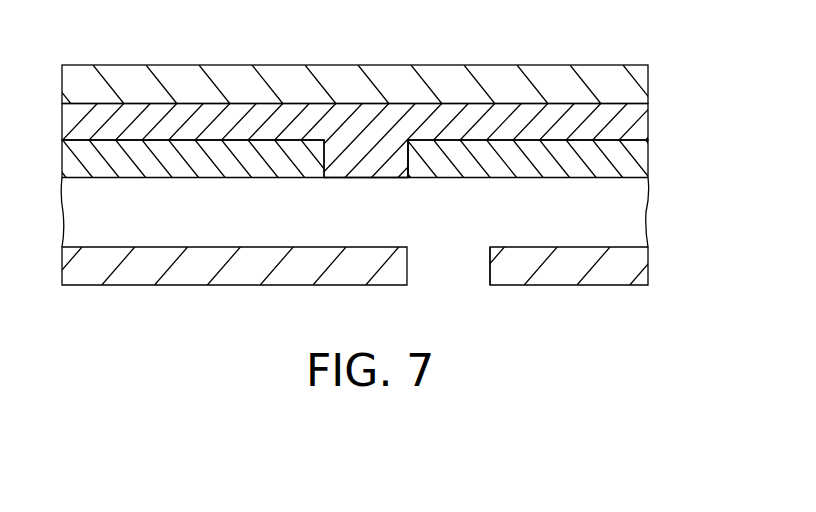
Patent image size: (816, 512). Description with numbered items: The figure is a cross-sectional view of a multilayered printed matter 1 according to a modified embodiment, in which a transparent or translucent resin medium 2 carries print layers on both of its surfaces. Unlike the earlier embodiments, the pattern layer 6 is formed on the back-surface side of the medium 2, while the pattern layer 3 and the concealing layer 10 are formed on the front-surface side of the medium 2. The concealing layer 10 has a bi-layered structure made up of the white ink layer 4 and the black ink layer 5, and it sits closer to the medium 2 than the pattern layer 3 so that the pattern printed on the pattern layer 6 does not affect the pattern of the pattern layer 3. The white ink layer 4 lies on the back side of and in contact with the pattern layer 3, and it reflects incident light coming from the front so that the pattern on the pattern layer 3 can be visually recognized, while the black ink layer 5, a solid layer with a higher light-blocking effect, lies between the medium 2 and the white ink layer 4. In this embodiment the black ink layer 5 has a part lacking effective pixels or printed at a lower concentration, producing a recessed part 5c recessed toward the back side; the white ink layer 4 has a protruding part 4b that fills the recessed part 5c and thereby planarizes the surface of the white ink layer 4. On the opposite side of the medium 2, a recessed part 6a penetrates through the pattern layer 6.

The multilayered printed matter 1 is at (640, 54).
The medium 2 is at (650, 213).
The pattern layer 3 is at (650, 85).
The white ink layer 4 is at (650, 125).
The protruding part 4b is at (353, 178).
The black ink layer 5 is at (650, 157).
The recessed part 5c is at (407, 163).
The pattern layer 6 is at (650, 271).
The recessed part 6a is at (489, 263).
The concealing layer 10 is at (700, 112).